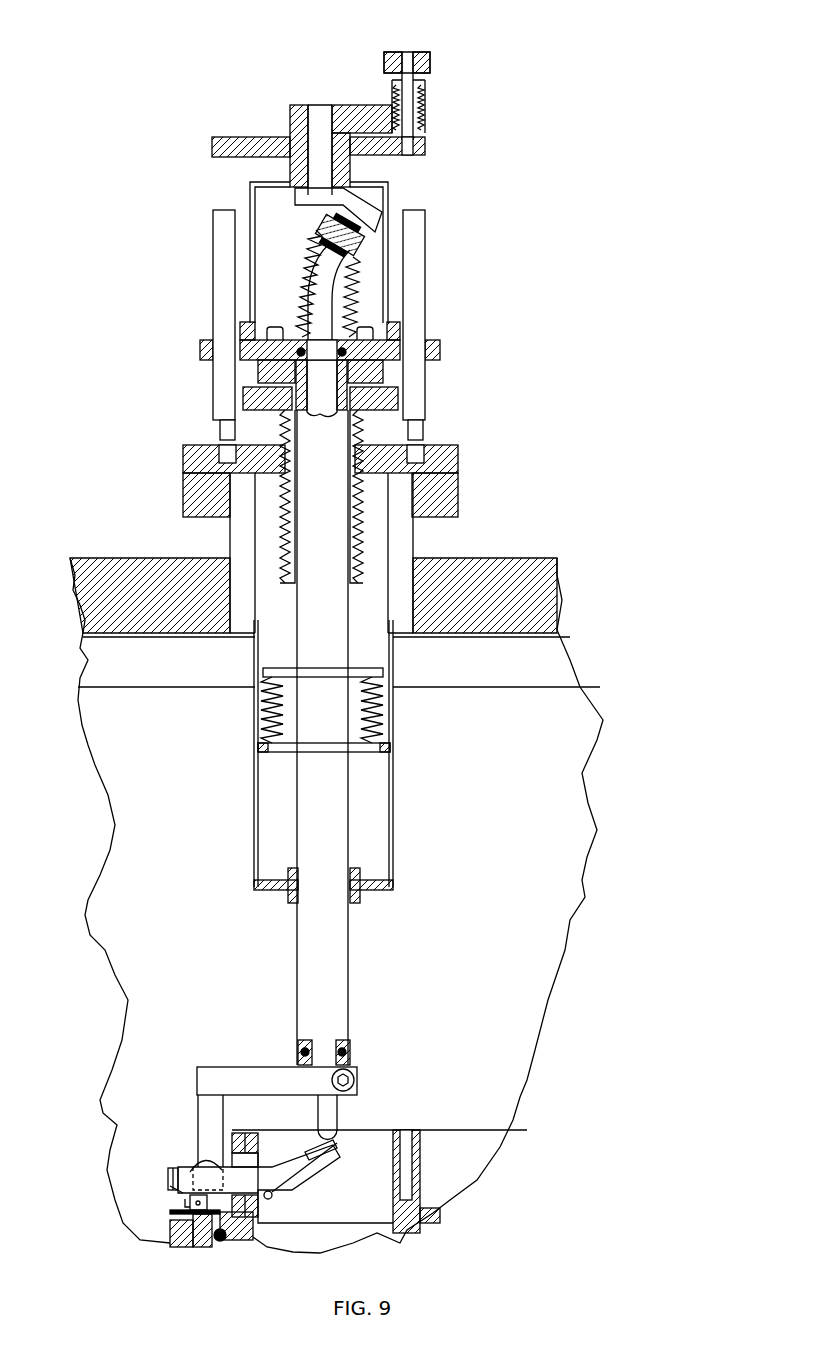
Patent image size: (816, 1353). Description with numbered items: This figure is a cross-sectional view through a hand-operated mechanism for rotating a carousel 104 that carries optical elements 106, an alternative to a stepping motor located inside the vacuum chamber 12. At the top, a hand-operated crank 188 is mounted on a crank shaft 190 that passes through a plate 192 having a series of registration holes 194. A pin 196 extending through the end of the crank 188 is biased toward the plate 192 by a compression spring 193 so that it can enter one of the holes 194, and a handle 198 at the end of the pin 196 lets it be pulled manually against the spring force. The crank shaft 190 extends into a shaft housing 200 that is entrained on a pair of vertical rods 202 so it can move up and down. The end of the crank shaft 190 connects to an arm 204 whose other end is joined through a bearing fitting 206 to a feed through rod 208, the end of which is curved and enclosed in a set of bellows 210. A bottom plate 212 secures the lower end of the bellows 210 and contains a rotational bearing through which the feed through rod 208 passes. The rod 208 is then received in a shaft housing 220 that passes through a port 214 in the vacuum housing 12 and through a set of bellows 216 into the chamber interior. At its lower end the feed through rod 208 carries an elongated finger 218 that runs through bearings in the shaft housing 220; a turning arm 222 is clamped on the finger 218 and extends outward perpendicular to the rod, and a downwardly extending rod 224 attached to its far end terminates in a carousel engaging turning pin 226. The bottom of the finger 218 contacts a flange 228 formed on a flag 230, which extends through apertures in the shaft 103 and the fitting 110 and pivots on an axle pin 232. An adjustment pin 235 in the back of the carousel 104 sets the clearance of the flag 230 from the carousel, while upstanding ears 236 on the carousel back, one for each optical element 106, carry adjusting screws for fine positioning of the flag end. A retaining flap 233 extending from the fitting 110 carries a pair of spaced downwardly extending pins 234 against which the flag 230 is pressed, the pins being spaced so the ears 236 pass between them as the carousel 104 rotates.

The vacuum chamber 12 is at (515, 560).
The shaft 103 is at (393, 1145).
The carousel 104 is at (170, 1222).
The optical elements 106 is at (196, 1248).
The fitting 110 is at (445, 1122).
The hand-operated crank 188 is at (350, 105).
The crank shaft 190 is at (318, 105).
The plate 192 is at (243, 137).
The compression spring 193 is at (425, 110).
The registration holes 194 is at (425, 148).
The pin 196 is at (413, 85).
The handle 198 is at (430, 60).
The shaft housing 200 is at (390, 205).
The vertical rods 202 is at (213, 292).
The arm 204 is at (362, 194).
The bearing fitting 206 is at (332, 223).
The feed through rod 208 is at (330, 395).
The bellows 210 is at (300, 285).
The bottom plate 212 is at (441, 350).
The port 214 is at (410, 545).
The bellows 216 is at (383, 710).
The elongated finger 218 is at (318, 1112).
The shaft housing 220 is at (345, 815).
The turning arm 222 is at (235, 1067).
The downwardly extending rod 224 is at (198, 1140).
The carousel engaging turning pin 226 is at (172, 1246).
The flange 228 is at (330, 1145).
The flag 230 is at (310, 1168).
The axle pin 232 is at (272, 1197).
The retaining flap 233 is at (188, 1177).
The downwardly extending pins 234 is at (168, 1172).
The adjustment pin 235 is at (185, 1203).
The upstanding ears 236 is at (170, 1187).